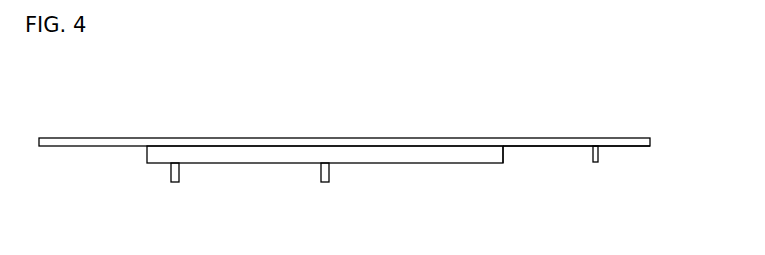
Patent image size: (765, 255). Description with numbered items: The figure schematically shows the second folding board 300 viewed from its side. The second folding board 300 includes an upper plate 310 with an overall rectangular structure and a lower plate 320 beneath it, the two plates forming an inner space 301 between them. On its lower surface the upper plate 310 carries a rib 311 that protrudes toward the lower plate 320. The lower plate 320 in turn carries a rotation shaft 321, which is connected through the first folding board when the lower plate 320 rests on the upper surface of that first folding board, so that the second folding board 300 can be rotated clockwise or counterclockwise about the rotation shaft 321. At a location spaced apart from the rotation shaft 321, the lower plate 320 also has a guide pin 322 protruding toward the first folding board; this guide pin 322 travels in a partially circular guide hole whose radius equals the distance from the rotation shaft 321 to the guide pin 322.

The second folding board 300 is at (391, 129).
The upper plate 310 is at (538, 137).
The lower plate 320 is at (452, 164).
The inner space 301 is at (505, 157).
The rotation shaft 321 is at (325, 182).
The guide pin 322 is at (175, 182).
The rib 311 is at (598, 152).